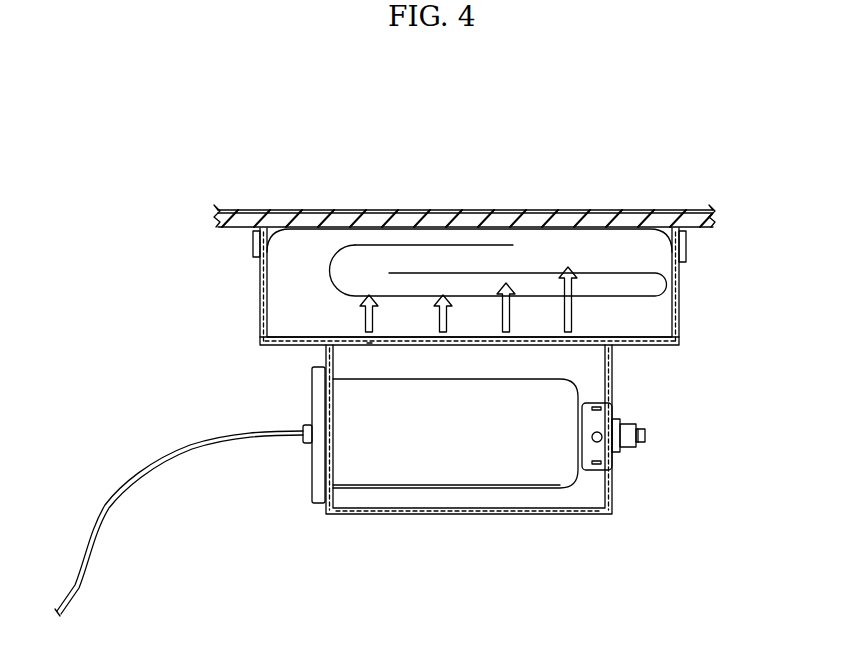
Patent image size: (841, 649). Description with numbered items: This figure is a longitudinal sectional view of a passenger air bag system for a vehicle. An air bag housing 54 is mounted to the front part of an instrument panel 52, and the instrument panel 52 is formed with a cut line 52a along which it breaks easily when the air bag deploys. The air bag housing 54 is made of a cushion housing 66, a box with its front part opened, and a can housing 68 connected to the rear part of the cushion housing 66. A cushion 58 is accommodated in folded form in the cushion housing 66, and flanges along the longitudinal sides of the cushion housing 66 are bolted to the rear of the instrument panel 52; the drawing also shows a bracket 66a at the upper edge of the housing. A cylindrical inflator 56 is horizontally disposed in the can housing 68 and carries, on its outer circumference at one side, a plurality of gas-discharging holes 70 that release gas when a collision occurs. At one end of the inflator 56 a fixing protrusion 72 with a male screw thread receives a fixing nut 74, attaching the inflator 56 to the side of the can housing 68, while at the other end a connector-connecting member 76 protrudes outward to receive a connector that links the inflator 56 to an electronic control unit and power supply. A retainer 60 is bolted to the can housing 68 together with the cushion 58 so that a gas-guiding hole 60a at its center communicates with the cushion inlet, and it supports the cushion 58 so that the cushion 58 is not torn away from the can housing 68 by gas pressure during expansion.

The instrument panel 52 is at (238, 213).
The cut line 52a is at (408, 213).
The air bag housing 54 is at (757, 335).
The inflator 56 is at (567, 488).
The cushion 58 is at (267, 284).
The retainer 60 is at (262, 341).
The gas-guiding hole 60a is at (367, 343).
The cushion housing 66 is at (679, 300).
The mounting bracket 66a is at (686, 245).
The can housing 68 is at (612, 370).
The gas-discharging holes 70 is at (603, 470).
The fixing protrusion 72 is at (640, 440).
The fixing nut 74 is at (645, 428).
The connector-connecting member 76 is at (307, 443).